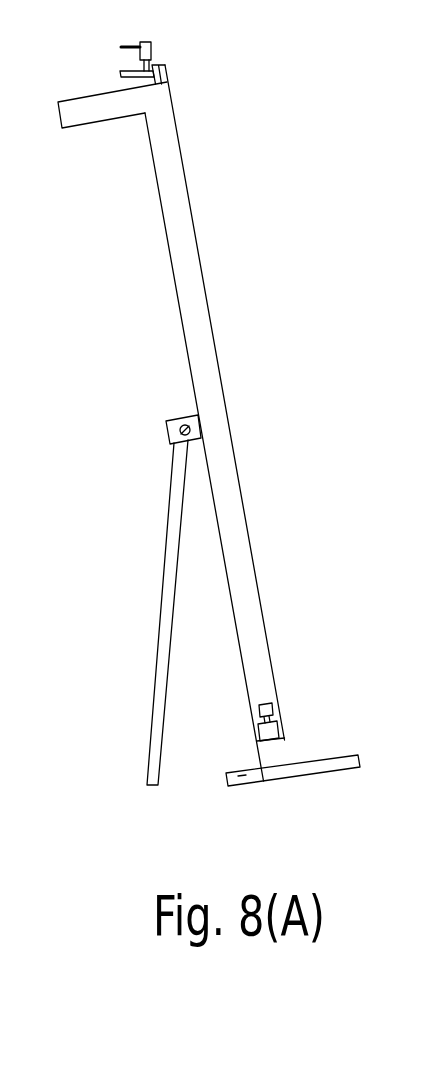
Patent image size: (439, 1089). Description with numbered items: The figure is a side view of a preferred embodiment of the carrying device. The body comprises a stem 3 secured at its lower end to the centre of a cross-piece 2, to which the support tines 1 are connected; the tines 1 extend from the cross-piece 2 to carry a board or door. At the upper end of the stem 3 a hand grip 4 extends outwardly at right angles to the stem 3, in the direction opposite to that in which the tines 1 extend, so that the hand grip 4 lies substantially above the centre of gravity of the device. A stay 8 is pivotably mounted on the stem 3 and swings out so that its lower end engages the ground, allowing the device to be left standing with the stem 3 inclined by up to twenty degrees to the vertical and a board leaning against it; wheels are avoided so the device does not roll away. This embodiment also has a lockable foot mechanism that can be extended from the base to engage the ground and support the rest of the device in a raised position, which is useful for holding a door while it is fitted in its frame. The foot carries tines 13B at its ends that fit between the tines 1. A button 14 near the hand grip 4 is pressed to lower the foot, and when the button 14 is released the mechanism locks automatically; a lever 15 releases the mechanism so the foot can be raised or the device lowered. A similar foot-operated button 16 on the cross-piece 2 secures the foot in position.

The tines 1 is at (343, 758).
The cross-piece 2 is at (278, 752).
The stem 3 is at (203, 328).
The hand grip 4 is at (92, 115).
The stay 8 is at (170, 620).
The tines of foot 13B is at (242, 775).
The button 14 is at (152, 46).
The lever 15 is at (132, 74).
The buttons 16 is at (271, 707).